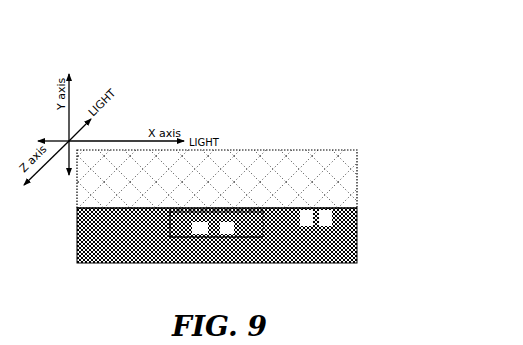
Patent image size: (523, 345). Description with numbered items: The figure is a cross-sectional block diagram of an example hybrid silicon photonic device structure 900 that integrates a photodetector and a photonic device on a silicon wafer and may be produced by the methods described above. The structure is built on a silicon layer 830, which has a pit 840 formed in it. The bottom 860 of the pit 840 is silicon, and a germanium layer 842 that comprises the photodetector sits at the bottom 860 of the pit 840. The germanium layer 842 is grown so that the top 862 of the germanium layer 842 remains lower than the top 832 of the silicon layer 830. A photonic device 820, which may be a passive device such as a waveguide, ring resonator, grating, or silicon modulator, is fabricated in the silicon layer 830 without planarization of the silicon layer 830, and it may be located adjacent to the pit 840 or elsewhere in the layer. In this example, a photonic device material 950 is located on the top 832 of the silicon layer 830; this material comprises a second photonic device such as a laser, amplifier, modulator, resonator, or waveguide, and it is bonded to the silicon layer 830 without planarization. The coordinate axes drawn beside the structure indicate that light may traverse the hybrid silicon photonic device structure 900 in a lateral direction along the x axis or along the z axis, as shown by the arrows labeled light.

The hybrid silicon photonic device structure 900 is at (179, 77).
The photonic device material 950 is at (360, 180).
The silicon layer 830 is at (358, 230).
The top of silicon layer 832 is at (353, 208).
The photonic device 820 is at (305, 200).
The pit 840 is at (182, 205).
The germanium layer 842 is at (169, 226).
The bottom of pit 860 is at (223, 214).
The top of germanium layer 862 is at (224, 239).